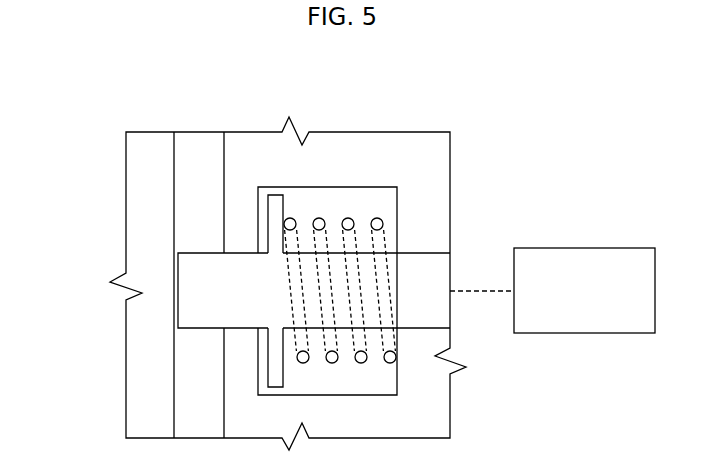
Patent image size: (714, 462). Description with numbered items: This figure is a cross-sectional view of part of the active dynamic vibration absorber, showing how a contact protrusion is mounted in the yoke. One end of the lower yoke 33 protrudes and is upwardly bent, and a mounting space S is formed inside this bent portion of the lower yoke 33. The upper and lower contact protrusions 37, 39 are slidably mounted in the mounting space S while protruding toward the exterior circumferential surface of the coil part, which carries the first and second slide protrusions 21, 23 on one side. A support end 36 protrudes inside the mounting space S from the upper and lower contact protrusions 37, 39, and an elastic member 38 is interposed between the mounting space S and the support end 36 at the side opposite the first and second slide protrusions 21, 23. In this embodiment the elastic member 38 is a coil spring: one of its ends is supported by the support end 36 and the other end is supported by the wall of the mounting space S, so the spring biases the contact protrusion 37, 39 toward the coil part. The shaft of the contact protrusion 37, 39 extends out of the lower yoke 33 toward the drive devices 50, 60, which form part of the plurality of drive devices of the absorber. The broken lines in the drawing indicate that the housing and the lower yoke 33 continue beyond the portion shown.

The first slide protrusion 21 is at (128, 285).
The second slide protrusion 23 is at (145, 173).
The lower yoke 33 is at (415, 138).
The support end 36 is at (273, 197).
The upper contact protrusion 37 is at (278, 296).
The lower contact protrusion 39 is at (193, 312).
The elastic member 38 is at (345, 220).
The mounting space S is at (327, 242).
The drive device 50 is at (584, 267).
The drive device 60 is at (581, 247).